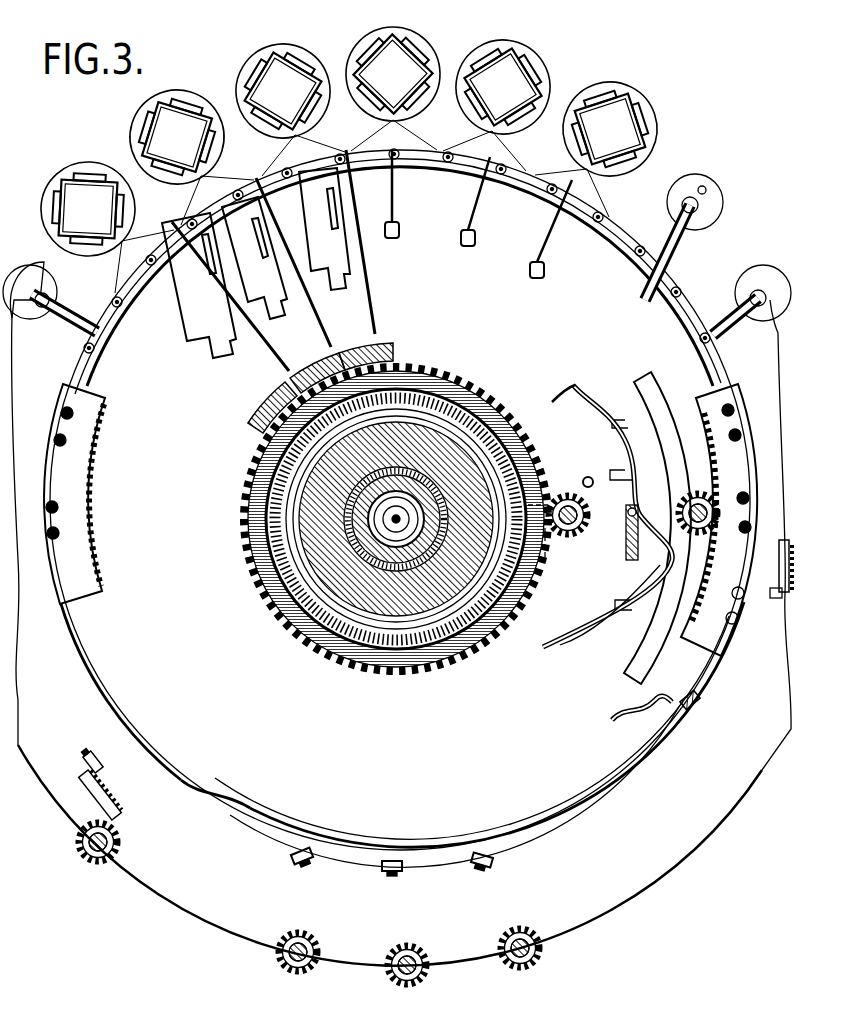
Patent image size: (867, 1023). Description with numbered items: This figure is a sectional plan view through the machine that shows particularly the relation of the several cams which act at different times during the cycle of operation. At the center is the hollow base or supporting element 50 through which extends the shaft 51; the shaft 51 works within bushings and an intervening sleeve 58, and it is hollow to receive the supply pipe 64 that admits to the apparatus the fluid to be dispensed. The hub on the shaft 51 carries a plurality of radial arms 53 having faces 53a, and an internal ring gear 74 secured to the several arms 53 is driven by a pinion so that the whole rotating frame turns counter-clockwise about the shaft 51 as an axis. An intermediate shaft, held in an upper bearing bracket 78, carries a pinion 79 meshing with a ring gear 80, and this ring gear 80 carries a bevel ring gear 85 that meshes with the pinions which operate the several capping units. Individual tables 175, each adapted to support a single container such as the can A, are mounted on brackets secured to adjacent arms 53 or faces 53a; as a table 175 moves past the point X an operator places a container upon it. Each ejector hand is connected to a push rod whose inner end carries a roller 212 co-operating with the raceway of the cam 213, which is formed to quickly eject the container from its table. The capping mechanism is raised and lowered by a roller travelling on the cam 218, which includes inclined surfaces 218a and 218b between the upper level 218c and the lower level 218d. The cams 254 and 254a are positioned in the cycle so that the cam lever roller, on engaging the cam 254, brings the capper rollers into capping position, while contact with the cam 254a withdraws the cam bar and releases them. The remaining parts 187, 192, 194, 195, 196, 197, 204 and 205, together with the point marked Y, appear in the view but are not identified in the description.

The hollow base or supporting element 50 is at (275, 605).
The shaft 51 is at (377, 532).
The radial arms 53 is at (365, 306).
The faces of the arms 53a is at (352, 160).
The intervening sleeve 58 is at (353, 516).
The supply pipe 64 is at (376, 507).
The ring gear 74 is at (90, 478).
The upper bearing bracket 78 is at (538, 566).
The pinion 79 is at (562, 494).
The ring gear 80 is at (440, 392).
The bevel ring gear 85 is at (280, 558).
The tables 175 is at (642, 118).
The weighted rods 187 is at (397, 214).
The curved segment 192 is at (642, 645).
The gear 194 is at (97, 866).
The rack 195 is at (92, 790).
The casing wall 196 is at (790, 640).
The lever wheel 197 is at (724, 208).
The stop piece 204 is at (90, 760).
The rack piece 205 is at (776, 600).
The roller 212 is at (630, 532).
The cam 213 is at (570, 624).
The cam 218 is at (380, 872).
The inclined surface 218a is at (192, 786).
The inclined surface 218b is at (700, 692).
The upper level 218c is at (70, 600).
The lower level 218d is at (285, 843).
The cam 254 is at (455, 850).
The cam 254a is at (612, 720).
The can A is at (270, 70).
The point X is at (722, 520).
The marker Y is at (20, 781).